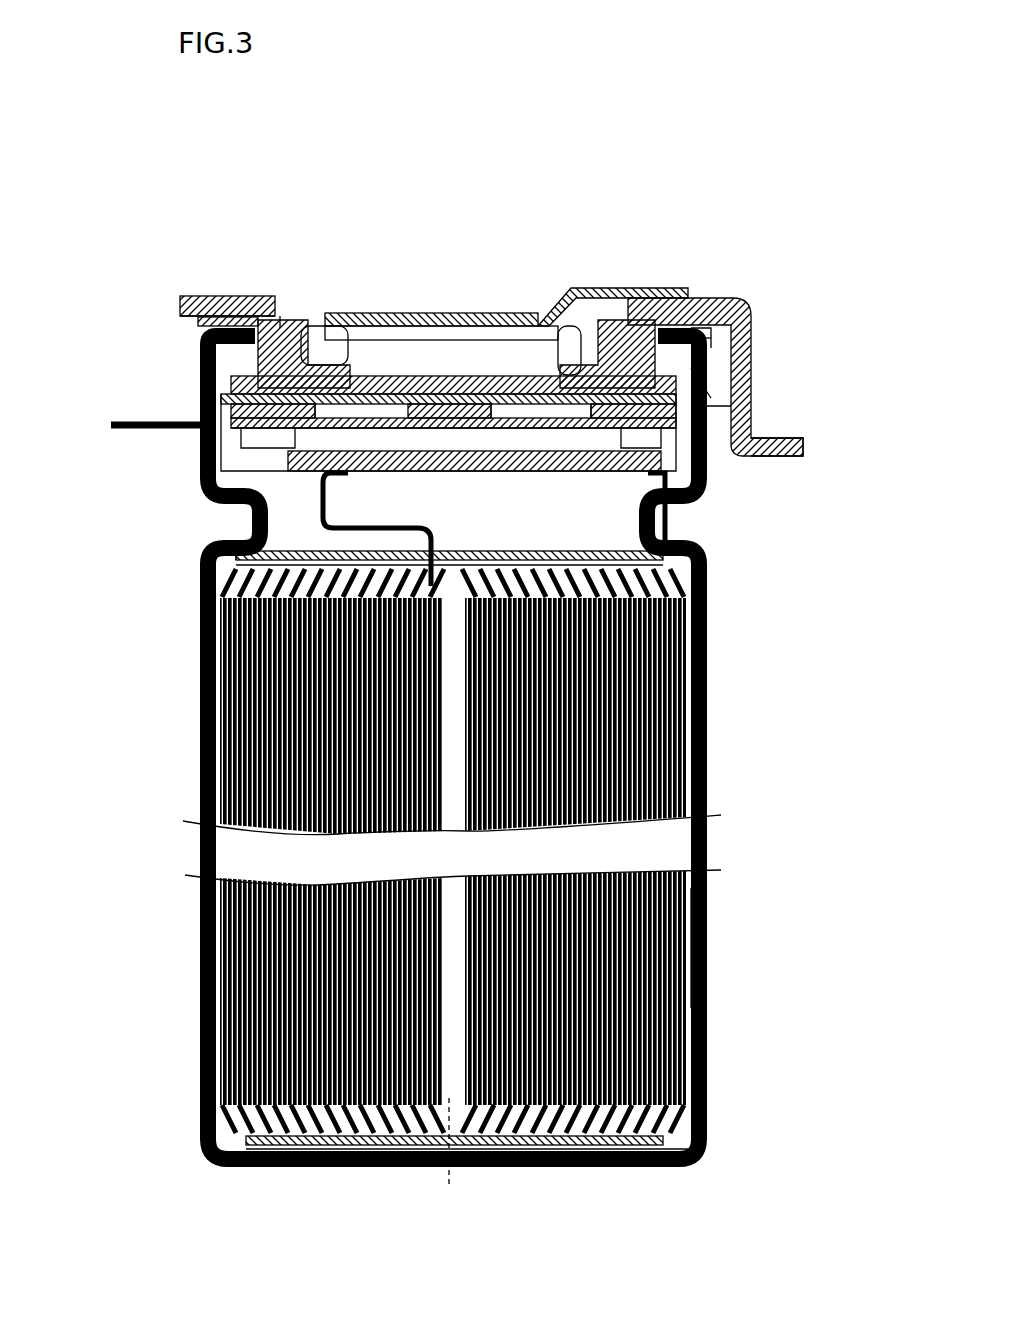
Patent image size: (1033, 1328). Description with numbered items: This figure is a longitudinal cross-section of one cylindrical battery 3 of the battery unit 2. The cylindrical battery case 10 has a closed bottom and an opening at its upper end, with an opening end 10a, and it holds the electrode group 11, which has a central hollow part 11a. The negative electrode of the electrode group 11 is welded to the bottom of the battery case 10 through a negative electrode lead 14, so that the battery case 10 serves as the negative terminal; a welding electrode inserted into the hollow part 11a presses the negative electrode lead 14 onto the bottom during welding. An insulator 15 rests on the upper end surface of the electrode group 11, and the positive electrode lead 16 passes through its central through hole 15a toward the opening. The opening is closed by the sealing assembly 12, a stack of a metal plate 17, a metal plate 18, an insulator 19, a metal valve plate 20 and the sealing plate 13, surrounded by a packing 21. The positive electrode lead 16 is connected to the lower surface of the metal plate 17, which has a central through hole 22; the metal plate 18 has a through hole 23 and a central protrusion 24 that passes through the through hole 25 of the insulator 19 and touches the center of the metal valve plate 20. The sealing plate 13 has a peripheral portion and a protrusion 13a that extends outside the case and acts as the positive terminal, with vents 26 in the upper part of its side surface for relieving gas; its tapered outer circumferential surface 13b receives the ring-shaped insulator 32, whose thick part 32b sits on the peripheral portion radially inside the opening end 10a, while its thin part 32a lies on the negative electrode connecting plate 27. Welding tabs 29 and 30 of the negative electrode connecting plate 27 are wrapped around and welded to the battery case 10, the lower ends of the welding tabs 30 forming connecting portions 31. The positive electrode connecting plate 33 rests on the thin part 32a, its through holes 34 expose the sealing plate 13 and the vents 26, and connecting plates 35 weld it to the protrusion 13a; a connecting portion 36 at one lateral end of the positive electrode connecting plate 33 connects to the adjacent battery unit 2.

The battery unit 2 is at (475, 764).
The cylindrical battery 3 is at (698, 768).
The battery case 10 is at (698, 632).
The opening end 10a is at (705, 322).
The electrode group 11 is at (698, 935).
The hollow part 11a is at (450, 1161).
The sealing assembly 12 is at (702, 375).
The sealing plate 13 is at (368, 305).
The protrusion 13a is at (343, 345).
The outer circumferential surface 13b is at (593, 345).
The negative electrode lead 14 is at (660, 1120).
The insulator 15 is at (650, 520).
The through hole 15a is at (460, 537).
The positive electrode lead 16 is at (373, 518).
The metal plate 17 is at (287, 430).
The metal plate 18 is at (225, 395).
The insulator 19 is at (185, 392).
The metal valve plate 20 is at (185, 370).
The packing 21 is at (207, 288).
The through hole 22 is at (418, 455).
The through hole 23 is at (340, 425).
The protrusion 24 is at (467, 387).
The through hole 25 is at (513, 417).
The vents 26 is at (322, 330).
The negative electrode connecting plate 27 is at (700, 328).
The welding tabs 29 is at (702, 398).
The welding tabs 30 is at (185, 383).
The connecting portions 31 is at (123, 415).
The insulator 32 is at (612, 330).
The thin part 32a is at (168, 300).
The thick part 32b is at (720, 293).
The positive electrode connecting plate 33 is at (240, 300).
The through holes 34 is at (278, 300).
The connecting plates 35 is at (557, 305).
The connecting portion 36 is at (793, 433).